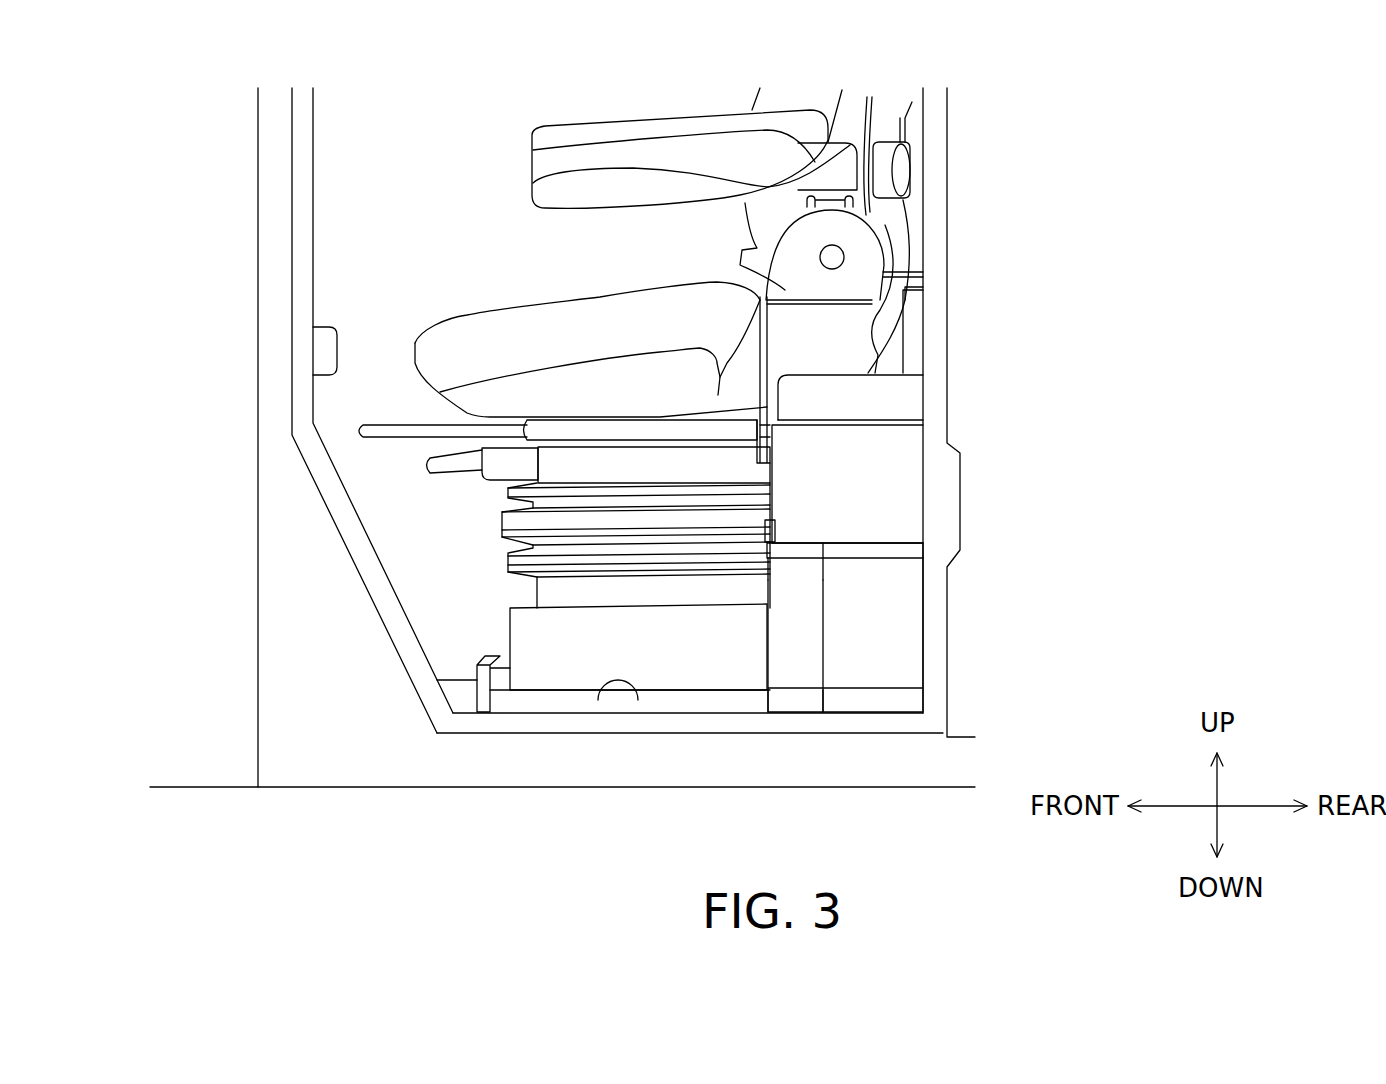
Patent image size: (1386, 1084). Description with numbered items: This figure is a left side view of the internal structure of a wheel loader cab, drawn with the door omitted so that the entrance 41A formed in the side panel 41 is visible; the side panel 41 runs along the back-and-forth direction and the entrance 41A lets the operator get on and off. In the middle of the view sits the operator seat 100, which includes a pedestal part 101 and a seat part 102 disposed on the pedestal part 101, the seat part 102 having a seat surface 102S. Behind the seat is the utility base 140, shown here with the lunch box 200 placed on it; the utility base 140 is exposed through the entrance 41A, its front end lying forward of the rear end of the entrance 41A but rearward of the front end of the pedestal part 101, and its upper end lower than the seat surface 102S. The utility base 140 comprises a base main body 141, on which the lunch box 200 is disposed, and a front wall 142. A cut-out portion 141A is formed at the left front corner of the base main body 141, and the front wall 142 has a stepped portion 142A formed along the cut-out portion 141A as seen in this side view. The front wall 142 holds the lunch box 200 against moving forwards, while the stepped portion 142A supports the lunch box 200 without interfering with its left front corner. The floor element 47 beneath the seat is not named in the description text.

The side panel 41 is at (292, 325).
The entrance 41A is at (398, 212).
The floor plate 47 is at (600, 700).
The operator seat 100 is at (183, 413).
The pedestal part 101 is at (510, 612).
The seat part 102 is at (540, 284).
The seat surface 102S is at (471, 307).
The utility base 140 is at (1100, 542).
The base main body 141 is at (897, 630).
The cut-out portion 141A is at (791, 653).
The front wall 142 is at (770, 532).
The stepped portion 142A is at (792, 556).
The lunch box 200 is at (883, 472).